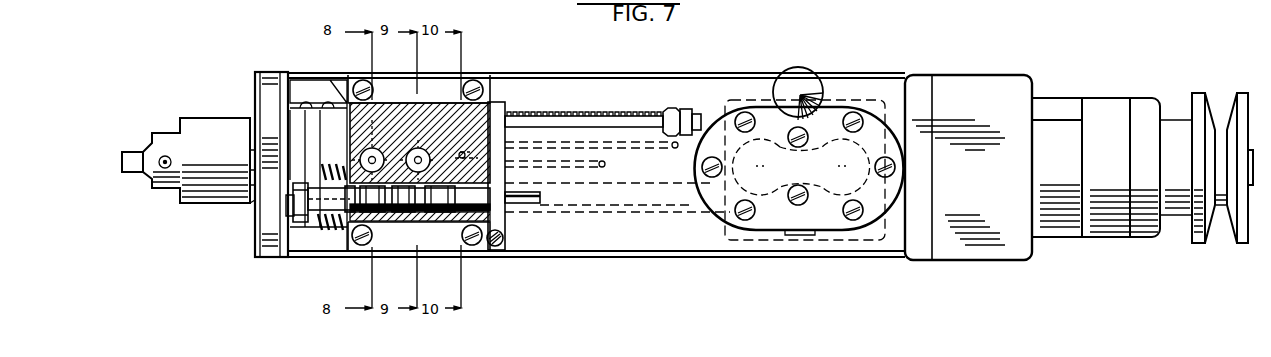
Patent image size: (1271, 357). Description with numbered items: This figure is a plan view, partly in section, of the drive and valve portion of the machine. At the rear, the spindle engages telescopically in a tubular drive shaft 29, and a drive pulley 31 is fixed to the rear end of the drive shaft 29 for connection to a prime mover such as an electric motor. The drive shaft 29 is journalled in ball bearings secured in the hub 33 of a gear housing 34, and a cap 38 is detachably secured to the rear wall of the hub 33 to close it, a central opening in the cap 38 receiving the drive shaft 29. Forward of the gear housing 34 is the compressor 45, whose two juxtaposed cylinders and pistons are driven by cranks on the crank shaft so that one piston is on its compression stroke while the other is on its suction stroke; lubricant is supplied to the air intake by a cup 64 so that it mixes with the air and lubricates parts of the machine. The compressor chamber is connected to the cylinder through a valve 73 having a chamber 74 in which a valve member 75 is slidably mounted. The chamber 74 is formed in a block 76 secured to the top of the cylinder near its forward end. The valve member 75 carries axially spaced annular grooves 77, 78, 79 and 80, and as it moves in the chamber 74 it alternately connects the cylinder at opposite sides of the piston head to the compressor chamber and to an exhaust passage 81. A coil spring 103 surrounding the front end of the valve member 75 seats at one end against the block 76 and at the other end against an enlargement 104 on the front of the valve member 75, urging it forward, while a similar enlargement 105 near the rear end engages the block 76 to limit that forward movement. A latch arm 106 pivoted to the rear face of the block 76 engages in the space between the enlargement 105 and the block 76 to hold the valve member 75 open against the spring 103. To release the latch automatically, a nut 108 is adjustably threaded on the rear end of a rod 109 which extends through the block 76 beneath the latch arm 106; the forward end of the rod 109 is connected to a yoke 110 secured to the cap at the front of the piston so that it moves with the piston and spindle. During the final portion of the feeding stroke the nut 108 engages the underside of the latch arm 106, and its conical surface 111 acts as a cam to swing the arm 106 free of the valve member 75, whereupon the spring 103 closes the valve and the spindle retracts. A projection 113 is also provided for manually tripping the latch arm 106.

The tubular drive shaft 29 is at (1243, 92).
The drive pulley 31 is at (1205, 240).
The hub 33 is at (1056, 238).
The gear housing 34 is at (1015, 250).
The cap 38 is at (1140, 238).
The compressor 45 is at (840, 118).
The cup 64 is at (790, 82).
The valve 73 is at (521, 236).
The valve chamber 74 is at (352, 168).
The valve member 75 is at (320, 222).
The block 76 is at (418, 100).
The annular groove 77 is at (350, 214).
The annular groove 78 is at (384, 224).
The annular groove 79 is at (418, 224).
The annular groove 80 is at (447, 222).
The exhaust passage 81 is at (672, 214).
The coil spring 103 is at (299, 240).
The enlargement 104 is at (290, 208).
The enlargement 105 is at (508, 206).
The latch arm 106 is at (497, 104).
The nut 108 is at (688, 108).
The rod 109 is at (565, 114).
The yoke 110 is at (264, 74).
The conical surface 111 is at (668, 108).
The projection 113 is at (482, 254).